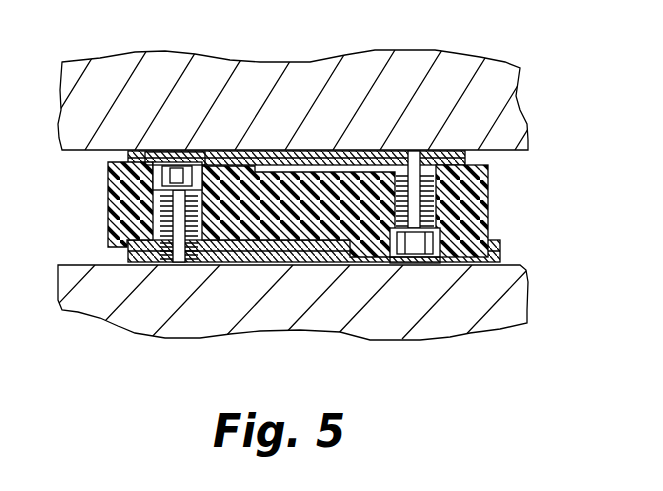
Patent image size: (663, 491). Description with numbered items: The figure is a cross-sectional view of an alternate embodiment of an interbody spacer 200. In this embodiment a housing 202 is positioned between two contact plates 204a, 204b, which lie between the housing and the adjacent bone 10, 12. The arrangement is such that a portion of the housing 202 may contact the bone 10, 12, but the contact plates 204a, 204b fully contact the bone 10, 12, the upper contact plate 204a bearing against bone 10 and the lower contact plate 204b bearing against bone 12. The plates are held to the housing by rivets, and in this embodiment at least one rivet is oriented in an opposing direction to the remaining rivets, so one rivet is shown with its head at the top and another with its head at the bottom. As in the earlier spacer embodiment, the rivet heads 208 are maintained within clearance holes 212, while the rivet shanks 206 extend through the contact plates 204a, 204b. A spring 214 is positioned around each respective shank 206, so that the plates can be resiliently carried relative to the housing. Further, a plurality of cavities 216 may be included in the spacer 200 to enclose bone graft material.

The bone 10 is at (513, 86).
The bone 12 is at (522, 312).
The spacer 200 is at (317, 201).
The housing 202 is at (489, 214).
The contact plate 204a is at (362, 152).
The contact plate 204b is at (203, 262).
The shank 206 is at (153, 197).
The rivet head 208 is at (186, 166).
The clearance hole 212 is at (162, 166).
The spring 214 is at (161, 248).
The cavity 216 is at (141, 158).